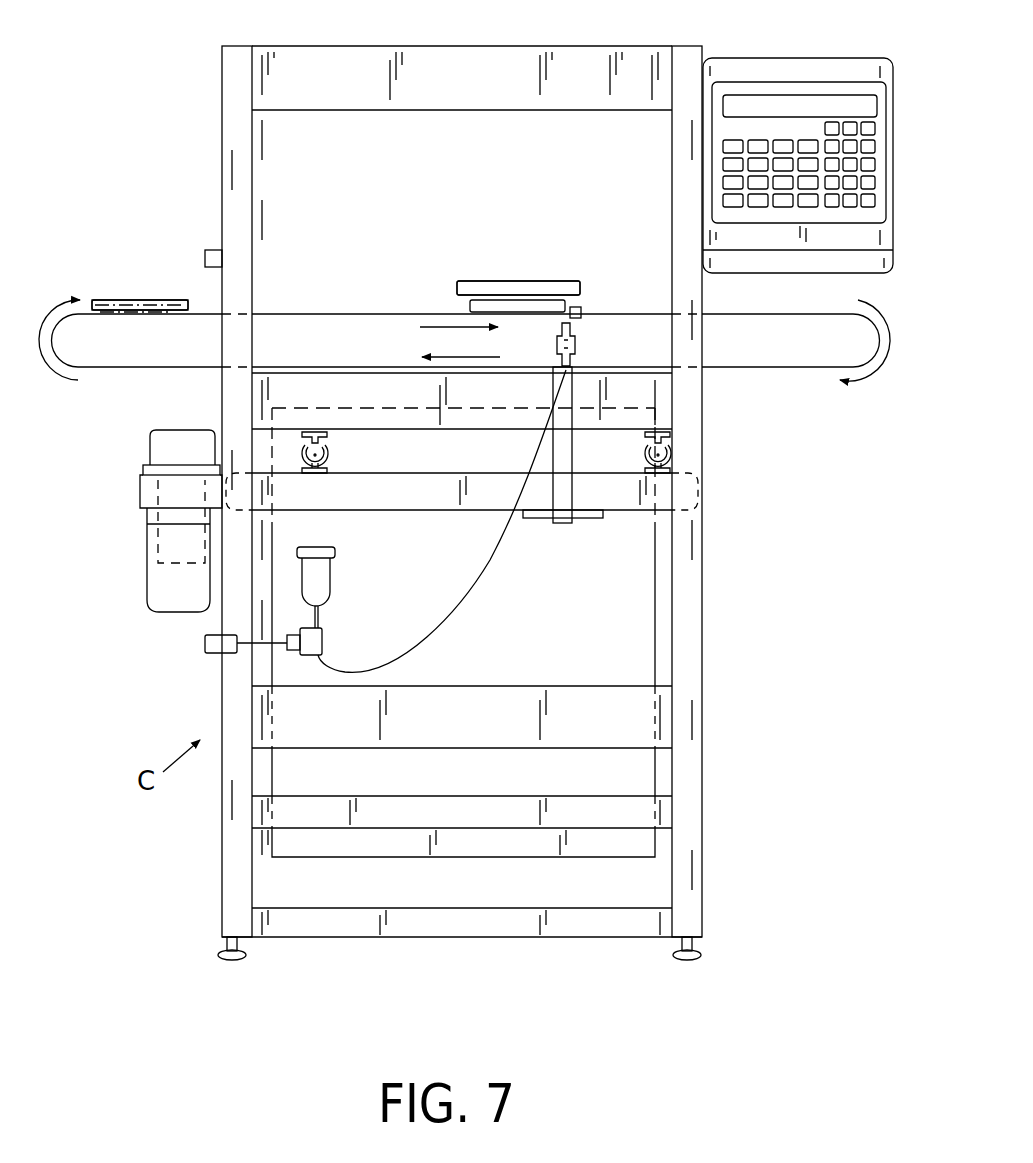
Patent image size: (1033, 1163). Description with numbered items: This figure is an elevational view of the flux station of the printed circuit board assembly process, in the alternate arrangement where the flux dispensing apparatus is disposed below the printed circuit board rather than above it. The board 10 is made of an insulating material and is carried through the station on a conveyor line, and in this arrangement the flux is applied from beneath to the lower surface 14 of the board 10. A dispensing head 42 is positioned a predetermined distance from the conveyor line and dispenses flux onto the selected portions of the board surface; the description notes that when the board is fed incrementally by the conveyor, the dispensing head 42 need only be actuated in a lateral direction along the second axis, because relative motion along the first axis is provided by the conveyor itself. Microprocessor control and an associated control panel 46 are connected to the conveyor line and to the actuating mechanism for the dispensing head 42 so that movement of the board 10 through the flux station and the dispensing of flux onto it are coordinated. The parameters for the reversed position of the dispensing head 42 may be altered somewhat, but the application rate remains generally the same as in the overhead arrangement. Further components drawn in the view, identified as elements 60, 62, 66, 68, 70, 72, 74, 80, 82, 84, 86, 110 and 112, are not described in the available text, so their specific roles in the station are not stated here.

The board 10 is at (128, 300).
The lower surface 14 is at (165, 313).
The dispensing head 42 is at (578, 341).
The control panel 46 is at (815, 82).
The loading station 60 is at (150, 278).
The sensor 62 is at (206, 250).
The processing station 66 is at (482, 212).
The position sensor 68 is at (582, 305).
The carriage assembly 70 is at (636, 553).
The filter 72 is at (158, 540).
The fluid reservoir 74 is at (172, 595).
The fluid bottle 80 is at (320, 582).
The valve 82 is at (327, 642).
The supply tube 84 is at (468, 588).
The pump controller 86 is at (212, 655).
The support plate 110 is at (535, 281).
The frame 112 is at (655, 602).